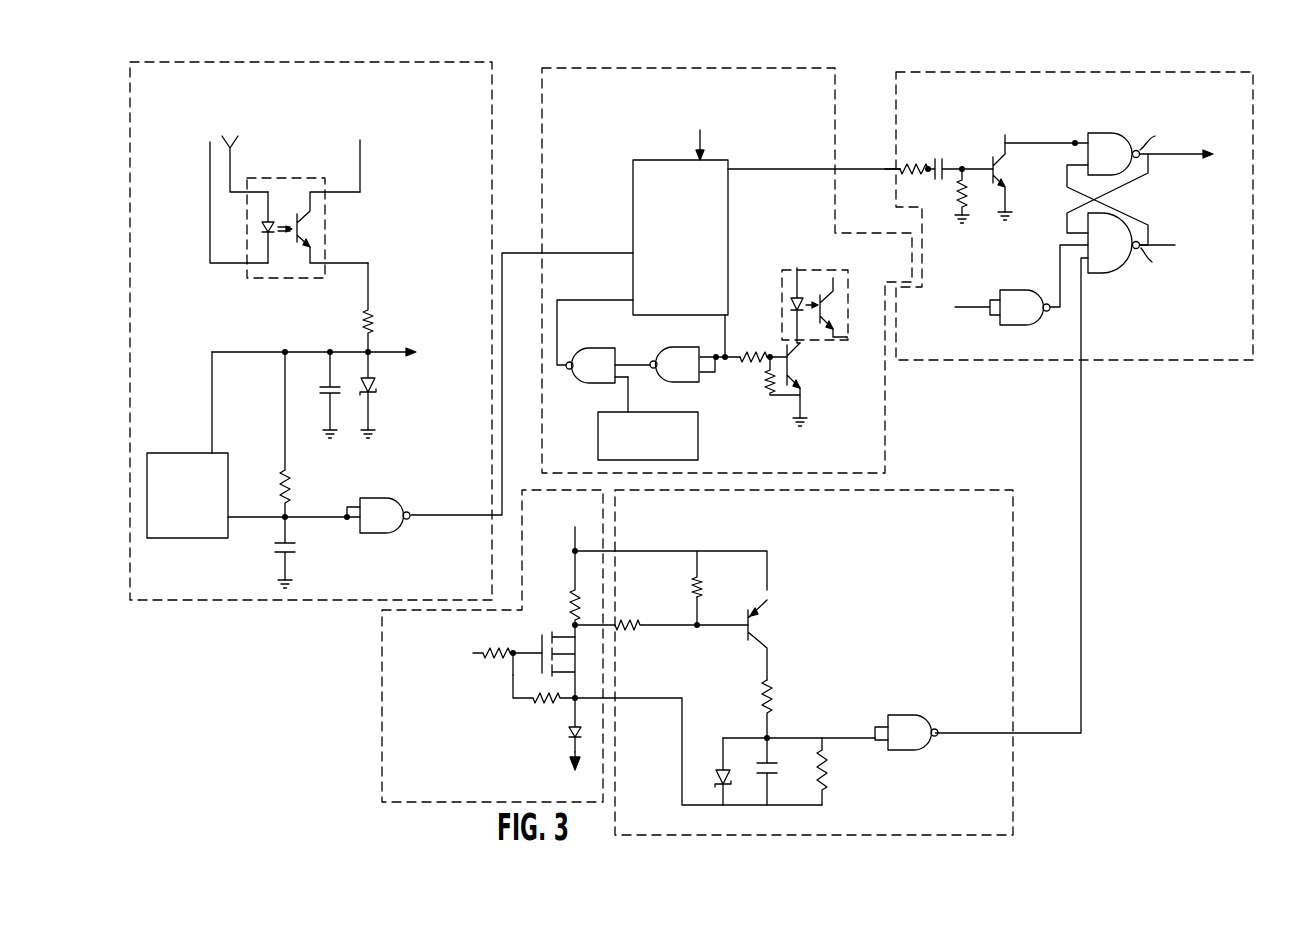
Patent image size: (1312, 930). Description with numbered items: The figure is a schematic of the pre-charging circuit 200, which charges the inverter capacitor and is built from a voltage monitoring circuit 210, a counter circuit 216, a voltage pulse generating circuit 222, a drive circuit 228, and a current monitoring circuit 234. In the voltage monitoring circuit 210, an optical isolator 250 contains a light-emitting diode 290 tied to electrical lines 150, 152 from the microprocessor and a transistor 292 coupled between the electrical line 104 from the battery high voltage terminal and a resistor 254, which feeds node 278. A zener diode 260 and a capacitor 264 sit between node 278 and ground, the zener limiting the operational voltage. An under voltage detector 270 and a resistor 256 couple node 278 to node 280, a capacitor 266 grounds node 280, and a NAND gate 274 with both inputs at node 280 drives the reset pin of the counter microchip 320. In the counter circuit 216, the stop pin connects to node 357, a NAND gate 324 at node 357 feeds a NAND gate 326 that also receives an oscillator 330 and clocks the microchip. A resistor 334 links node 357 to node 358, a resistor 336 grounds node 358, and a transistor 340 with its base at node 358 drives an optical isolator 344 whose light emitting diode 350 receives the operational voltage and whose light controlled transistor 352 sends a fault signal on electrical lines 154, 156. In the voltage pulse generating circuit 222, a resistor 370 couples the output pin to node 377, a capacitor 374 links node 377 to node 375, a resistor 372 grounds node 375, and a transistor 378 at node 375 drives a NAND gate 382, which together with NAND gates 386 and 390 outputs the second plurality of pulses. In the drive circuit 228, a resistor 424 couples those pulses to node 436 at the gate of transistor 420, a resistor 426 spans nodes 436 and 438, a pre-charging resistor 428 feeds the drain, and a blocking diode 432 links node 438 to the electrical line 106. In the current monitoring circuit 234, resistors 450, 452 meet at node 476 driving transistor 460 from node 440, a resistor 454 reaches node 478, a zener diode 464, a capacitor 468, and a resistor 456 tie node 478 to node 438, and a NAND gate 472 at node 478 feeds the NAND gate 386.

The pre-charging circuit 200 is at (1140, 440).
The voltage monitoring circuit 210 is at (384, 63).
The counter circuit 216 is at (746, 68).
The voltage pulse generating circuit 222 is at (1255, 114).
The drive circuit 228 is at (380, 688).
The current monitoring circuit 234 is at (956, 490).
The electrical line 104 is at (362, 160).
The electrical line 106 is at (570, 760).
The electrical line 150 is at (232, 164).
The electrical line 152 is at (210, 156).
The electrical line 154 is at (846, 272).
The electrical line 156 is at (847, 338).
The optical isolator 250 is at (288, 179).
The resistor 254 is at (376, 316).
The resistor 256 is at (292, 482).
The zener diode 260 is at (377, 387).
The capacitor 264 is at (321, 389).
The capacitor 266 is at (296, 546).
The under voltage detector 270 is at (176, 452).
The NAND gate 274 is at (384, 498).
The node 278 is at (287, 349).
The node 280 is at (280, 525).
The light-emitting diode 290 is at (272, 221).
The transistor 292 is at (312, 230).
The counter microchip 320 is at (648, 160).
The NAND gate 324 is at (694, 383).
The NAND gate 326 is at (598, 348).
The oscillator 330 is at (630, 396).
The resistor 334 is at (750, 352).
The resistor 336 is at (766, 398).
The transistor 340 is at (803, 372).
The optical isolator 344 is at (806, 266).
The light emitting diode 350 is at (806, 304).
The light controlled transistor 352 is at (838, 318).
The node 357 is at (728, 360).
The node 358 is at (770, 355).
The resistor 370 is at (924, 166).
The resistor 372 is at (958, 194).
The capacitor 374 is at (944, 164).
The node 375 is at (980, 168).
The node 377 is at (918, 174).
The transistor 378 is at (1010, 158).
The NAND gate 382 is at (1104, 133).
The NAND gate 386 is at (1114, 274).
The NAND gate 390 is at (1016, 290).
The transistor 420 is at (544, 640).
The resistor 424 is at (490, 651).
The resistor 426 is at (540, 702).
The resistor 428 is at (570, 596).
The diode 432 is at (568, 732).
The node 436 is at (511, 662).
The node 438 is at (578, 698).
The node 440 is at (577, 630).
The resistor 450 is at (630, 620).
The resistor 452 is at (702, 588).
The resistor 454 is at (774, 690).
The resistor 456 is at (830, 770).
The transistor 460 is at (768, 614).
The zener diode 464 is at (716, 780).
The capacitor 468 is at (770, 770).
The NAND gate 472 is at (904, 715).
The node 476 is at (698, 630).
The node 478 is at (770, 738).